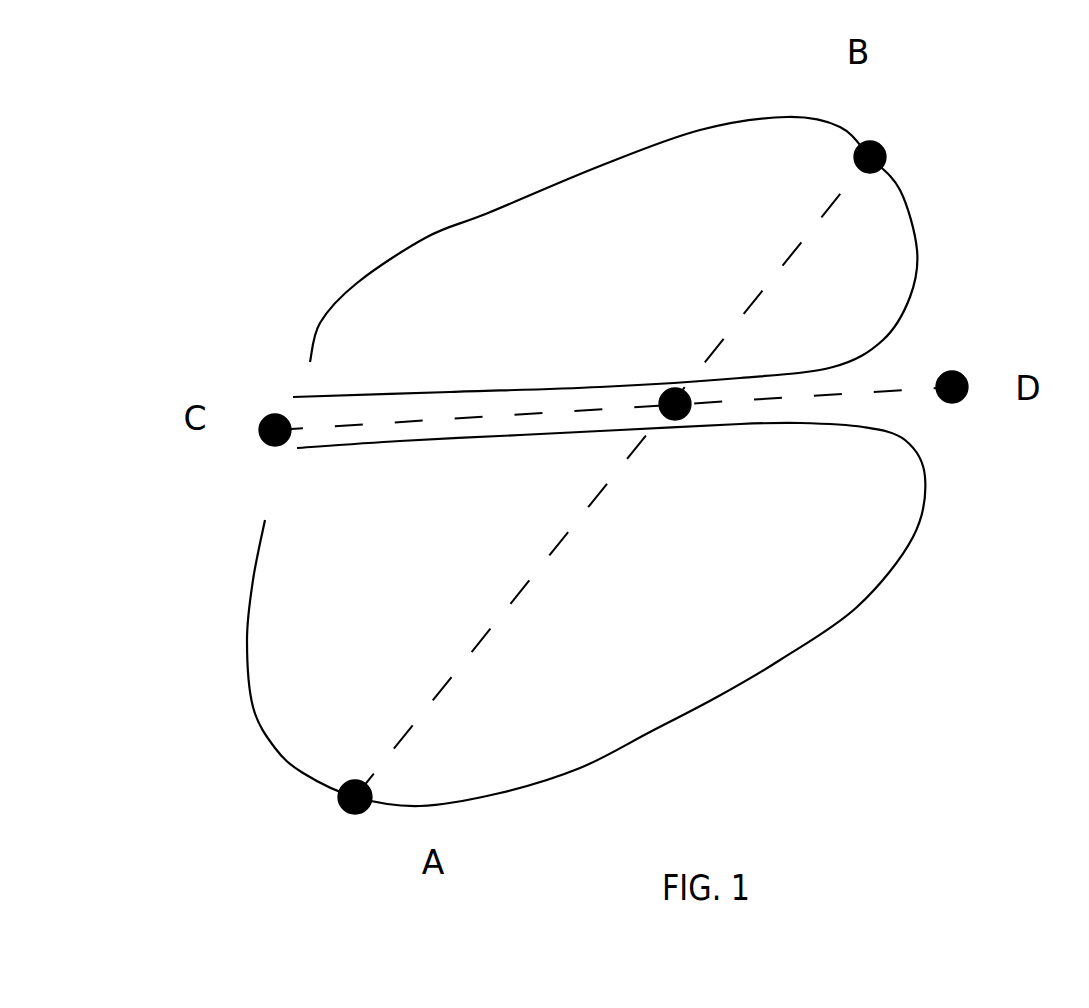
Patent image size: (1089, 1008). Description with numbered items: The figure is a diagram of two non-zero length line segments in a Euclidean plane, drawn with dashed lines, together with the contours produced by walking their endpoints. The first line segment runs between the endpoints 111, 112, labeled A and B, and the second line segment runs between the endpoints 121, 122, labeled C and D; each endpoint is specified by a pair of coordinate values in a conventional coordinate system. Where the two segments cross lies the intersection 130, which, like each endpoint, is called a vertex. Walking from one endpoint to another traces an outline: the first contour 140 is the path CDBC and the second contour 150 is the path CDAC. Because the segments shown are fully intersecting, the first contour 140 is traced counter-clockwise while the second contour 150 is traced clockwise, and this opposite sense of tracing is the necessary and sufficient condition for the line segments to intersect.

The endpoint 111 is at (355, 814).
The endpoint 112 is at (868, 141).
The endpoint 121 is at (257, 441).
The endpoint 122 is at (951, 403).
The intersection 130 is at (625, 382).
The first contour 140 is at (488, 213).
The second contour 150 is at (717, 697).